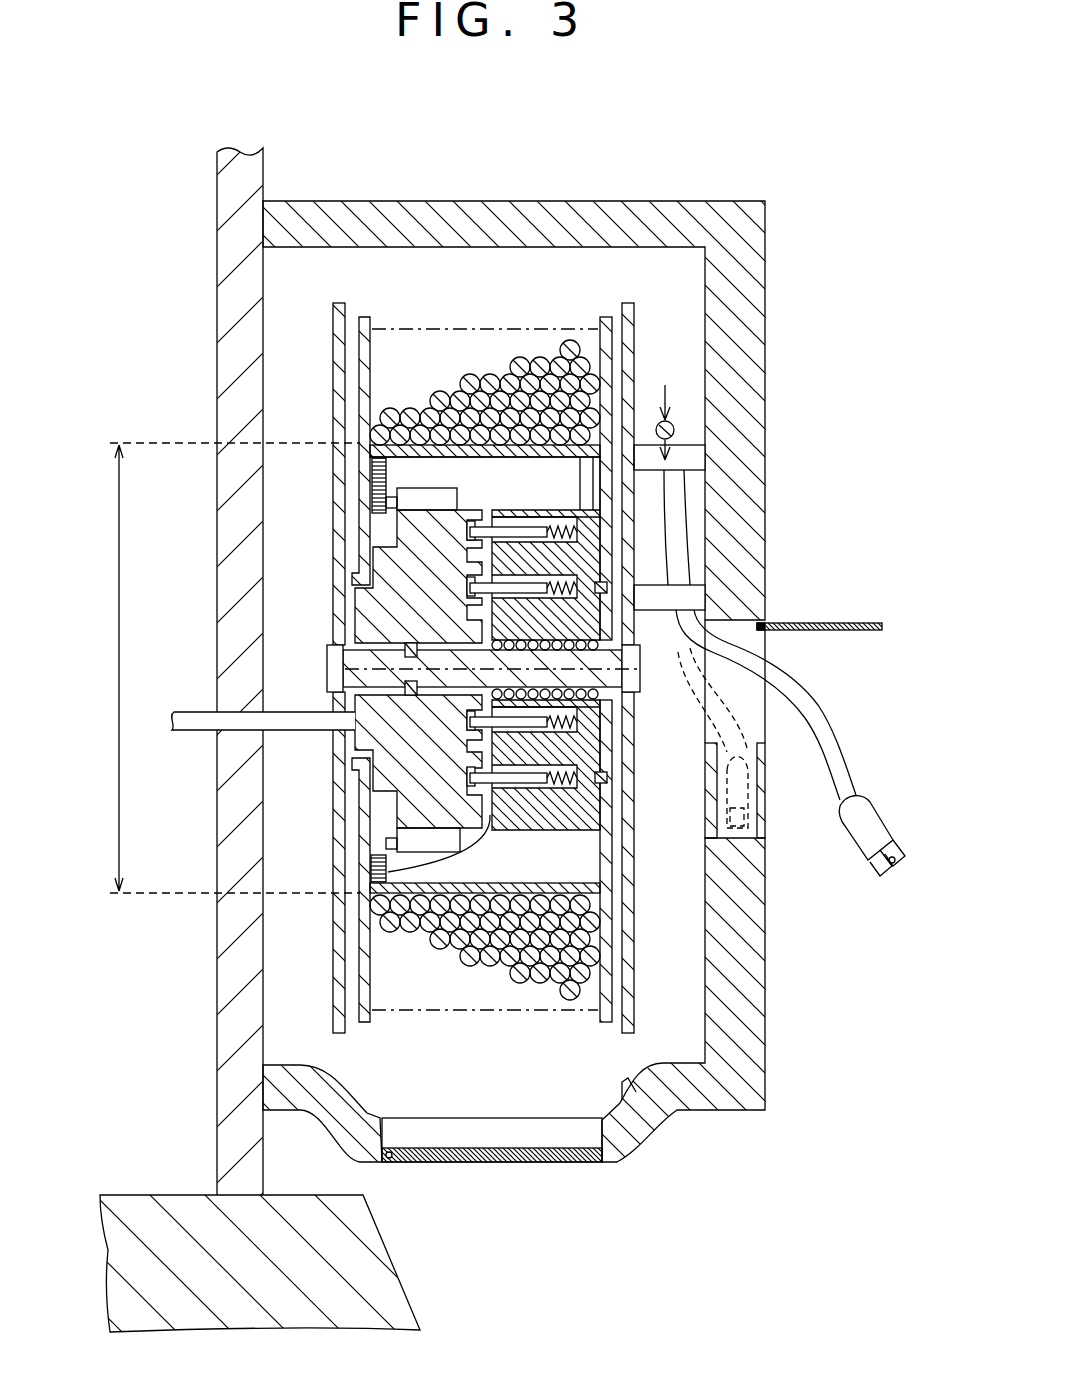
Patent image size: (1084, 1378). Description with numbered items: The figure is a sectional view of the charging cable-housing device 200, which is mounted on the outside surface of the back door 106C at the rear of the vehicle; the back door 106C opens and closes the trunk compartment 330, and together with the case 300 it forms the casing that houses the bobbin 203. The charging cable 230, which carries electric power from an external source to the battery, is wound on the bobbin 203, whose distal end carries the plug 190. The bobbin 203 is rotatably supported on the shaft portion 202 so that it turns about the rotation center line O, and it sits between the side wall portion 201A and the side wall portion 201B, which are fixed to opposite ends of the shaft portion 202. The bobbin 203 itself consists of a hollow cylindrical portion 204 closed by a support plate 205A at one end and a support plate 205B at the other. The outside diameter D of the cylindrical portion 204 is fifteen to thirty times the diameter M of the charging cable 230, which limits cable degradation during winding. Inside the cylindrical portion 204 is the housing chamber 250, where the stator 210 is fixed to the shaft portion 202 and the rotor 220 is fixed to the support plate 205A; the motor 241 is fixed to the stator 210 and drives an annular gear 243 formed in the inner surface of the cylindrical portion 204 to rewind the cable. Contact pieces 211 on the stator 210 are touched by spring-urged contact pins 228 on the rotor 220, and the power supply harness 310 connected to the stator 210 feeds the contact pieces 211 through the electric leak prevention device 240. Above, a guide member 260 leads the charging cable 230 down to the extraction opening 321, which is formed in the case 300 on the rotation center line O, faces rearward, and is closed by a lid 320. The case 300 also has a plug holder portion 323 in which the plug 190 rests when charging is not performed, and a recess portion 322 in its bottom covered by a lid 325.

The charging cable-housing device 200 is at (479, 122).
The side wall portion 201A is at (634, 337).
The side wall portion 201B is at (338, 385).
The shaft portion 202 is at (337, 660).
The bobbin 203 is at (397, 510).
The cylindrical portion 204 is at (393, 928).
The support plate 205A is at (612, 975).
The support plate 205B is at (367, 985).
The stator 210 is at (357, 617).
The contact pieces 211 is at (373, 872).
The rotor 220 is at (585, 808).
The contact pins 228 is at (523, 780).
The charging cable 230 is at (806, 718).
The electric leak prevention device 240 is at (407, 840).
The motor 241 is at (423, 503).
The annular gear 243 is at (372, 468).
The housing chamber 250 is at (521, 488).
The guide member 260 is at (690, 457).
The case 300 is at (750, 1025).
The power supply harness 310 is at (192, 729).
The lid 320 is at (830, 623).
The extraction opening 321 is at (772, 732).
The recess portion 322 is at (650, 1128).
The plug holder portion 323 is at (763, 808).
The lid 325 is at (545, 1162).
The trunk compartment 330 is at (170, 1125).
The plug 190 is at (866, 832).
The back door 106C is at (235, 558).
The diameter of the charging cable M is at (668, 392).
The rotation center line O is at (327, 670).
The outside diameter of the cylindrical portion D is at (224, 668).